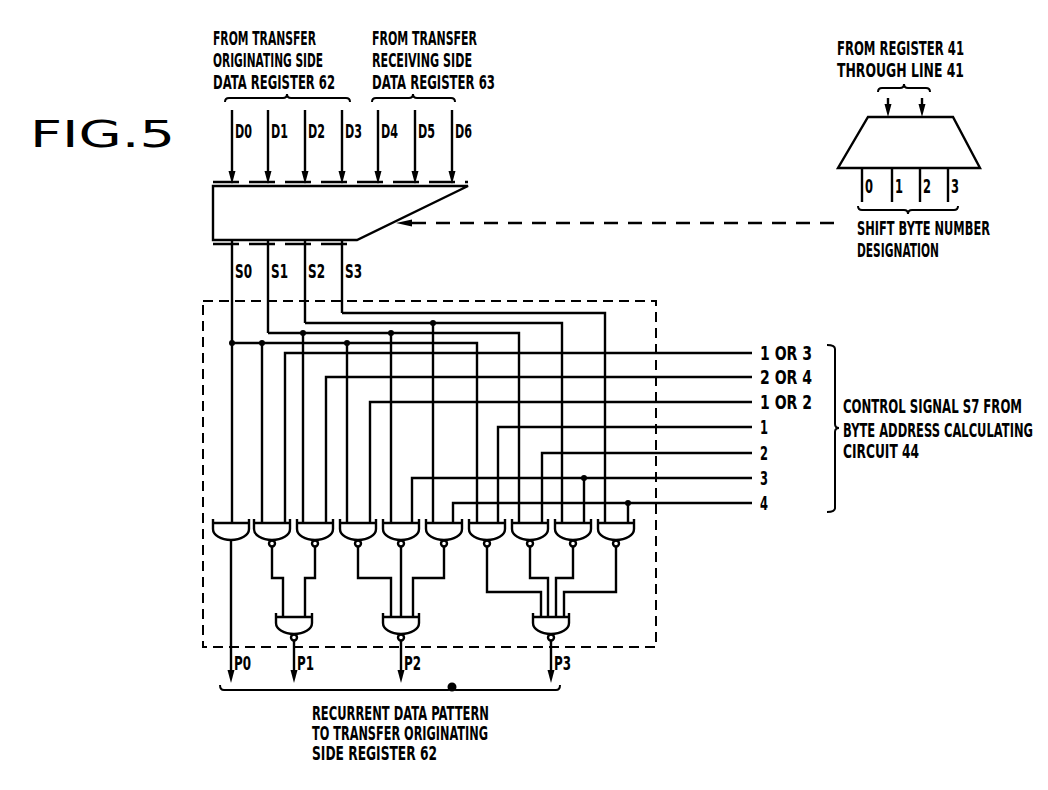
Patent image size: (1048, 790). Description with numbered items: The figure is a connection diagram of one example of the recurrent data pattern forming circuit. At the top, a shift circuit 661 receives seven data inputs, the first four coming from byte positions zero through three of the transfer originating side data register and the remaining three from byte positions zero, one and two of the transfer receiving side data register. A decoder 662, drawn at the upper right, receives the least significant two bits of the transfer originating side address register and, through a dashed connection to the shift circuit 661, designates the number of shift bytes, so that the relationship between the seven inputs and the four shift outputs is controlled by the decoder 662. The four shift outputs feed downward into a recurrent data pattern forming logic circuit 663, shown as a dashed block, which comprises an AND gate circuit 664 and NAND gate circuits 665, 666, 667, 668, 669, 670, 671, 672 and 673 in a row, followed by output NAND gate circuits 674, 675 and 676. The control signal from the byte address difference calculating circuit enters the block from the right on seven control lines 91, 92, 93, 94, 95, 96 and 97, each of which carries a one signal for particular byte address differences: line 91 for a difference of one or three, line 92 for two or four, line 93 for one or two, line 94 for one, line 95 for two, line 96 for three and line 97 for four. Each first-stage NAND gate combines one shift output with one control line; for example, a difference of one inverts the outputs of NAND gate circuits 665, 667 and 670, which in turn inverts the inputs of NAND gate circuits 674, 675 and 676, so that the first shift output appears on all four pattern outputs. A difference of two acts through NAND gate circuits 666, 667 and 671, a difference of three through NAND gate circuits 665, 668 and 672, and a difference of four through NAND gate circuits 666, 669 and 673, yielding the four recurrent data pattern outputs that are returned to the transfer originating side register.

The shift circuit 661 is at (403, 229).
The decoder 662 is at (967, 148).
The recurrent data pattern forming logic circuit 663 is at (616, 300).
The AND gate circuit 664 is at (236, 601).
The NAND gate circuit 665 is at (277, 568).
The NAND gate circuit 666 is at (320, 568).
The NAND gate circuit 667 is at (365, 568).
The NAND gate circuit 668 is at (406, 568).
The NAND gate circuit 669 is at (443, 568).
The NAND gate circuit 670 is at (505, 568).
The NAND gate circuit 671 is at (535, 568).
The NAND gate circuit 672 is at (578, 568).
The NAND gate circuit 673 is at (604, 568).
The NAND gate circuit 674 is at (312, 626).
The NAND gate circuit 675 is at (419, 626).
The NAND gate circuit 676 is at (569, 626).
The control line 91 is at (518, 428).
The control line 92 is at (539, 440).
The control line 93 is at (561, 452).
The control line 94 is at (625, 465).
The control line 95 is at (647, 478).
The control line 96 is at (582, 490).
The control line 97 is at (602, 503).